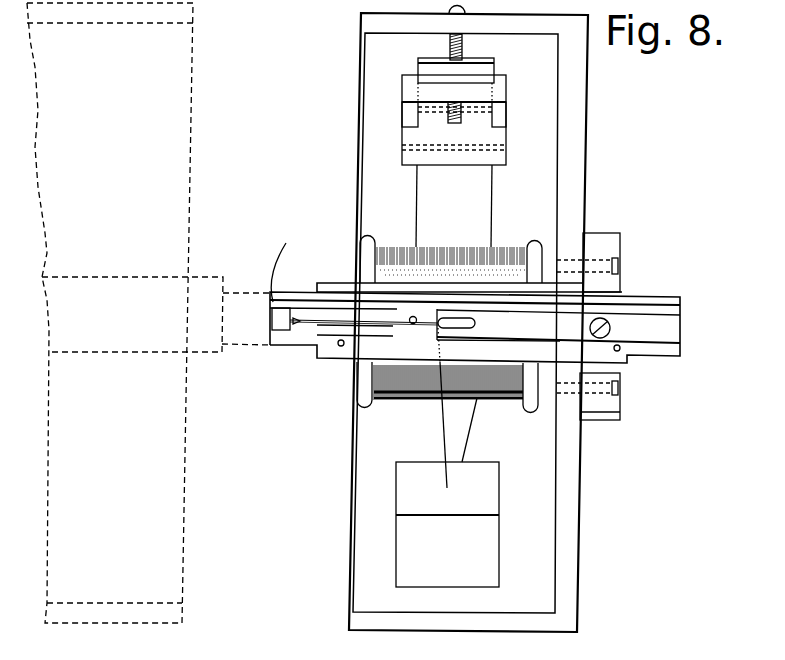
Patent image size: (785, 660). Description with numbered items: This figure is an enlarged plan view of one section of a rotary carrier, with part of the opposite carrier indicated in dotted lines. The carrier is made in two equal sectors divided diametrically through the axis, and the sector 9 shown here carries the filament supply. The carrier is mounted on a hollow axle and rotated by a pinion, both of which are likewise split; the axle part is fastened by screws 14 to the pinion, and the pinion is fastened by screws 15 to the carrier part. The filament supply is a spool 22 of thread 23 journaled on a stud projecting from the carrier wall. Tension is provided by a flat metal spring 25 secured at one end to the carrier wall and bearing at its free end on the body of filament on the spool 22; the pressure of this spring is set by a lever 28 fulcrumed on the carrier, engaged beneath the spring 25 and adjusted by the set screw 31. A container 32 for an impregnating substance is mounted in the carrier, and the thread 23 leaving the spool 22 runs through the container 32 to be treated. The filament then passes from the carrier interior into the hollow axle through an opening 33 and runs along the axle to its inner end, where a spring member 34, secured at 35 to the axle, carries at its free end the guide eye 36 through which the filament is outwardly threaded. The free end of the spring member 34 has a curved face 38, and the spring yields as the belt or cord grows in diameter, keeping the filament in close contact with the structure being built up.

The carrier sector 9 is at (545, 522).
The screws 14 is at (607, 323).
The screws 15 is at (622, 273).
The spool 22 is at (535, 243).
The thread 23 is at (472, 433).
The flat metal spring 25 is at (483, 185).
The lever 28 is at (503, 135).
The set screw 31 is at (463, 47).
The container 32 is at (489, 562).
The opening 33 is at (480, 323).
The spring member 34 is at (320, 325).
The securing point 35 is at (413, 324).
The guide eye 36 is at (293, 318).
The curved face 38 is at (287, 325).